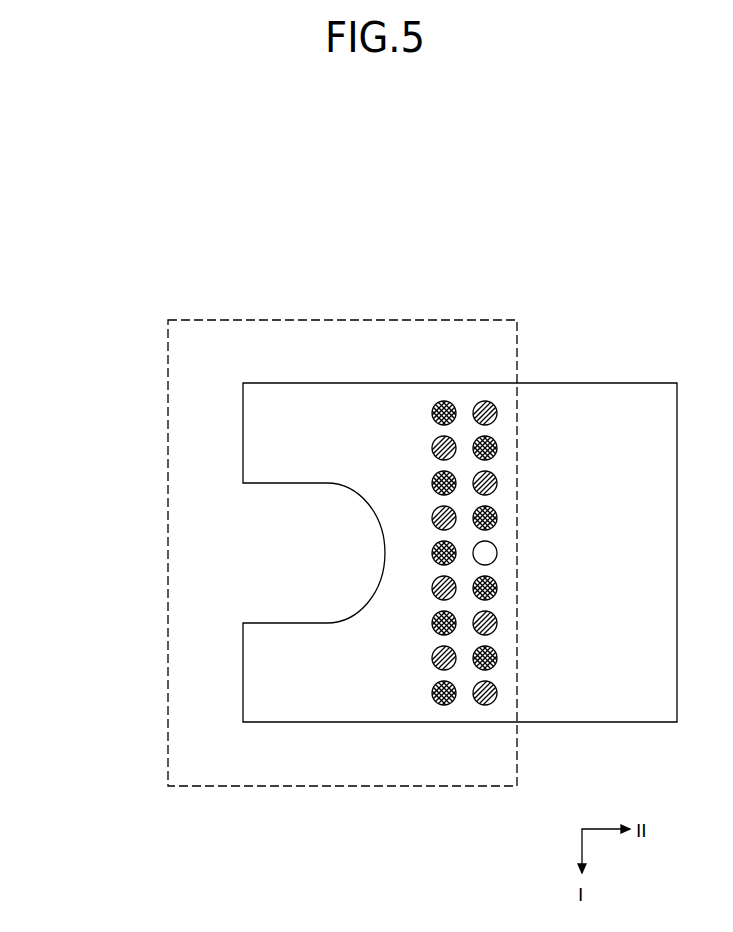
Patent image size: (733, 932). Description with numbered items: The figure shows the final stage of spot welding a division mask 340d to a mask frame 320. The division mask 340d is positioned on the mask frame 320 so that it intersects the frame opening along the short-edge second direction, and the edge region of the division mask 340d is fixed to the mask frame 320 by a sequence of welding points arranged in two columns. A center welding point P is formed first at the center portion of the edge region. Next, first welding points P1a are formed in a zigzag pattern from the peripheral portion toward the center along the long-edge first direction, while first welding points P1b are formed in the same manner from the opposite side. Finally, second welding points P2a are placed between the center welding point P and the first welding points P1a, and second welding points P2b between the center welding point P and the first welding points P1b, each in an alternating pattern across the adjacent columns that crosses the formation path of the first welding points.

The mask frame 320 is at (168, 582).
The division mask 340d is at (595, 383).
The second welding points P2a is at (497, 448).
The first welding points P1a is at (497, 483).
The center welding point P is at (497, 553).
The first welding points P1b is at (497, 623).
The second welding points P2b is at (497, 658).